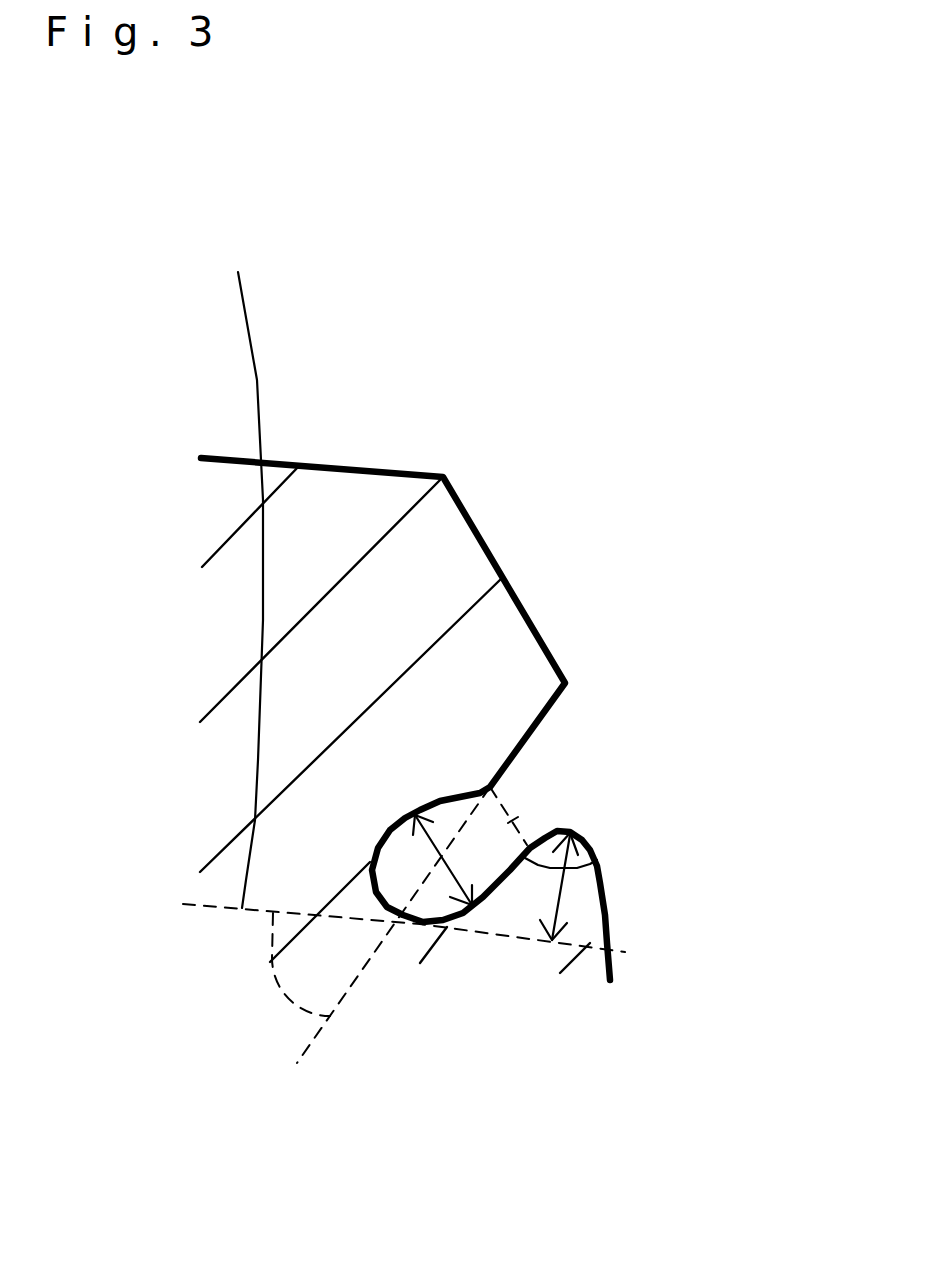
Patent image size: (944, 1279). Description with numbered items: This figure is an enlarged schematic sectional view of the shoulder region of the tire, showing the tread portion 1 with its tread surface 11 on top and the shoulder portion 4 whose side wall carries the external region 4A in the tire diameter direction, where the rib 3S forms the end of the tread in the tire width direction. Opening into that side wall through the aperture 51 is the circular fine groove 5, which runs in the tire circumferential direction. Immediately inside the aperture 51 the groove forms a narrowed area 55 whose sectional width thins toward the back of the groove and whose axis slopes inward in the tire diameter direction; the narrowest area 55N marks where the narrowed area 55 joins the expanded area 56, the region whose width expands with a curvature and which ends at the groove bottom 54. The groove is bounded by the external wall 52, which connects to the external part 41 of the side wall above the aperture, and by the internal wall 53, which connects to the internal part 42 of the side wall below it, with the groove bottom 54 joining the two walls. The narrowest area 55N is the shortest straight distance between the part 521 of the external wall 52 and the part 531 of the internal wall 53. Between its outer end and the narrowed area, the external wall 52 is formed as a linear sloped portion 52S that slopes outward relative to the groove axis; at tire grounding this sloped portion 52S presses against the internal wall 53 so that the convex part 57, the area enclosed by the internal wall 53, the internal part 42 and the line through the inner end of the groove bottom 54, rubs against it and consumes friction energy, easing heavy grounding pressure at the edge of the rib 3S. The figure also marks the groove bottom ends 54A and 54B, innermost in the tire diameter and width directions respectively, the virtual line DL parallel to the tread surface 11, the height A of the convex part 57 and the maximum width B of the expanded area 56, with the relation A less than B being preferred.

The tread portion 1 is at (304, 490).
The tread surface 11 is at (223, 457).
The position line DL is at (239, 564).
The rib 3S is at (352, 507).
The groove bottom 54 is at (378, 905).
The end of the groove bottom innermost in the tire diameter direction 54A is at (418, 930).
The end of the groove bottom innermost in the tire width direction 54B is at (368, 855).
The shoulder portion 4 is at (420, 580).
The external region in the tire diameter direction of the side wall 4A is at (477, 534).
The external part in the tire diameter direction 41 is at (447, 496).
The expanded area 56 is at (437, 800).
The sloped portion 52S is at (637, 573).
The part of the external wall 521 is at (490, 787).
The external wall 52 is at (637, 573).
The aperture 51 is at (583, 758).
The narrowed area 55 is at (533, 795).
The narrowest area 55N is at (515, 822).
The fine groove 5 is at (550, 826).
The part of the internal wall 531 is at (592, 858).
The internal wall 53 is at (506, 874).
The internal part in the tire diameter direction 42 is at (605, 910).
The convex part 57 is at (580, 922).
The height of the convexity A is at (557, 895).
The maximum width of the expanded area B is at (447, 853).